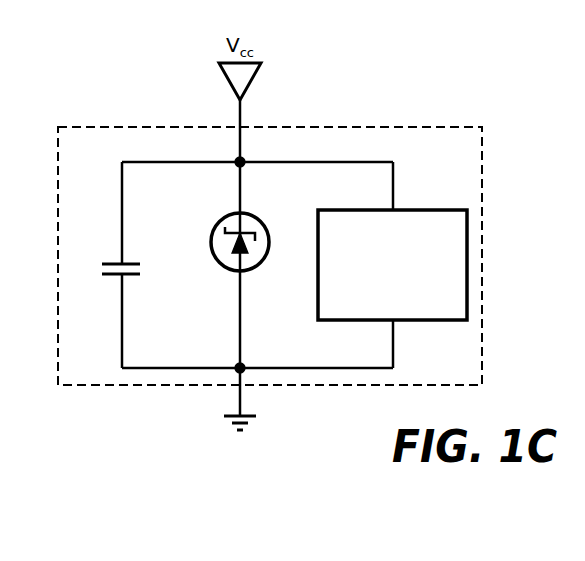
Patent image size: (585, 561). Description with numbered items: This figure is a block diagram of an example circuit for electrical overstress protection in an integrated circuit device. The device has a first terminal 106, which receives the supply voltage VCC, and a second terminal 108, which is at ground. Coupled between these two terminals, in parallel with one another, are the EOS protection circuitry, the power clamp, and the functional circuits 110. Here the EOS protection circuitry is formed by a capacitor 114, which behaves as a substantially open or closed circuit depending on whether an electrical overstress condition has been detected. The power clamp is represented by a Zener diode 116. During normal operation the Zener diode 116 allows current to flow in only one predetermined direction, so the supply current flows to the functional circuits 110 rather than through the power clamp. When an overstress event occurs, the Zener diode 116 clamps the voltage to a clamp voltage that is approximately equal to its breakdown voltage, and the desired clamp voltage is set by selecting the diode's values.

The first terminal 106 is at (255, 80).
The second terminal 108 is at (255, 432).
The functional circuits 110 is at (370, 305).
The capacitor C1 114 is at (135, 276).
The Zener diode 116 is at (223, 212).